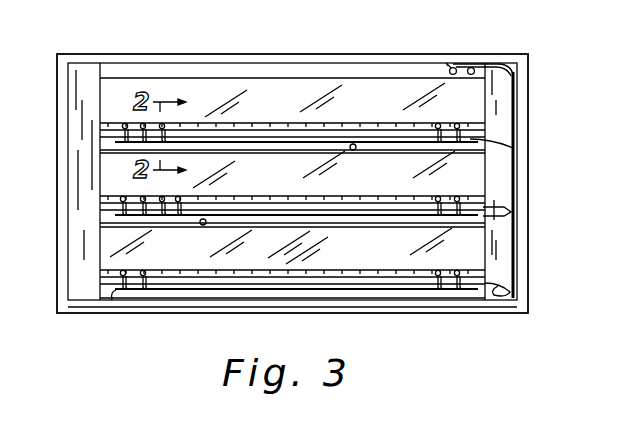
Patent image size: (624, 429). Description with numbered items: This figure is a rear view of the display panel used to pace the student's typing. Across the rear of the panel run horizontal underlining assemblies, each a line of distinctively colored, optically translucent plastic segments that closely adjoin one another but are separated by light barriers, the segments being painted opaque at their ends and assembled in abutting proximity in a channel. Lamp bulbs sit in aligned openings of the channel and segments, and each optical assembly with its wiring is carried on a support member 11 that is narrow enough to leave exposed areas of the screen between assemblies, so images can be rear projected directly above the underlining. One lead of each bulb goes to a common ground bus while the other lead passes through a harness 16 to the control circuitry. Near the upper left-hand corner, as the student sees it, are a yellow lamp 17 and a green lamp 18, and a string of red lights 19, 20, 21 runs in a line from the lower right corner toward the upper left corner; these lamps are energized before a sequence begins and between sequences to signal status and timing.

The support member 11 is at (458, 146).
The harness 16 is at (516, 223).
The yellow lamp 17 is at (473, 67).
The green lamp 18 is at (451, 68).
The red light 19 is at (116, 290).
The red light 20 is at (203, 225).
The red light 21 is at (353, 150).